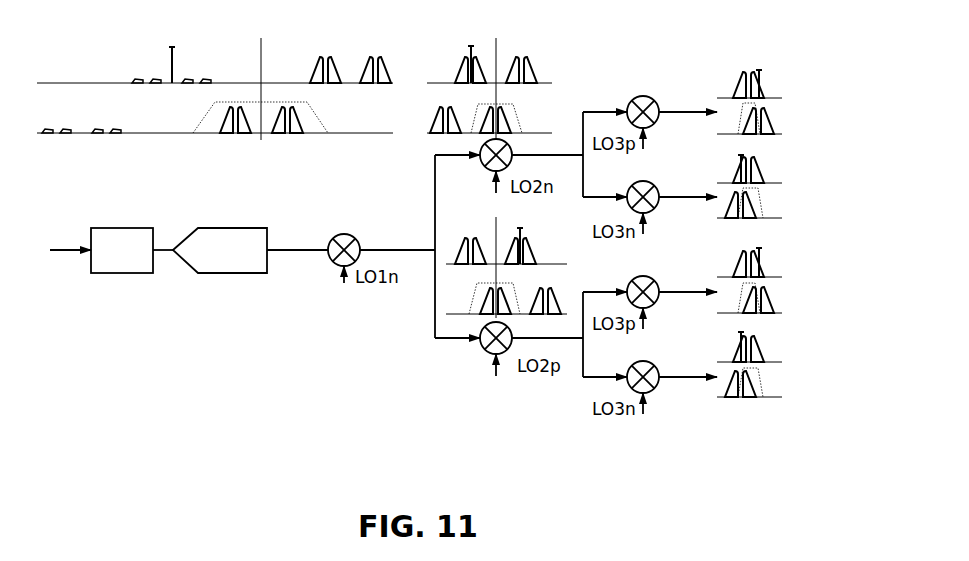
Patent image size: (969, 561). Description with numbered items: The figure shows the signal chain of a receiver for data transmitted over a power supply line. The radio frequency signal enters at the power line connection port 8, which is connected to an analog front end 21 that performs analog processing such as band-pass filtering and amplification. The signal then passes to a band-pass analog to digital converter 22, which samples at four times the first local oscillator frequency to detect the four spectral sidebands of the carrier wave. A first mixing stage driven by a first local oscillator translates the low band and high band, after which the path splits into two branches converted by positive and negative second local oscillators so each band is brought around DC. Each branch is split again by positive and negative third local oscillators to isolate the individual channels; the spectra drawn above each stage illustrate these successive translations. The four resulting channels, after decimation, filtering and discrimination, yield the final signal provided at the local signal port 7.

The power line connection port 8 is at (62, 250).
The analog front end 21 is at (112, 273).
The analog to digital converter 22 is at (208, 273).
The local signal port 7 is at (685, 377).